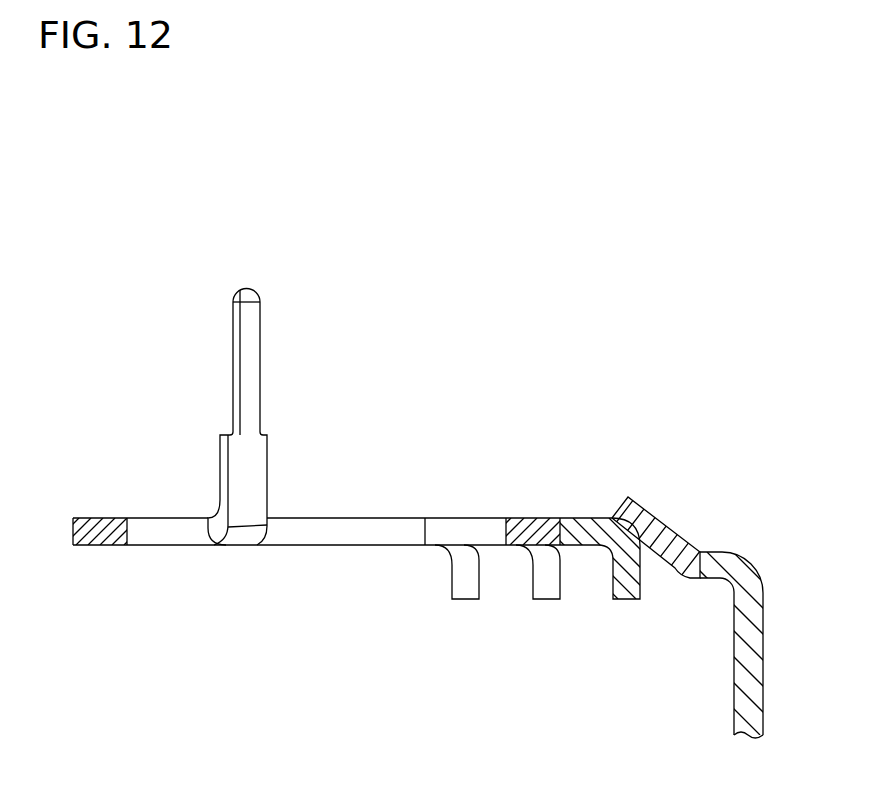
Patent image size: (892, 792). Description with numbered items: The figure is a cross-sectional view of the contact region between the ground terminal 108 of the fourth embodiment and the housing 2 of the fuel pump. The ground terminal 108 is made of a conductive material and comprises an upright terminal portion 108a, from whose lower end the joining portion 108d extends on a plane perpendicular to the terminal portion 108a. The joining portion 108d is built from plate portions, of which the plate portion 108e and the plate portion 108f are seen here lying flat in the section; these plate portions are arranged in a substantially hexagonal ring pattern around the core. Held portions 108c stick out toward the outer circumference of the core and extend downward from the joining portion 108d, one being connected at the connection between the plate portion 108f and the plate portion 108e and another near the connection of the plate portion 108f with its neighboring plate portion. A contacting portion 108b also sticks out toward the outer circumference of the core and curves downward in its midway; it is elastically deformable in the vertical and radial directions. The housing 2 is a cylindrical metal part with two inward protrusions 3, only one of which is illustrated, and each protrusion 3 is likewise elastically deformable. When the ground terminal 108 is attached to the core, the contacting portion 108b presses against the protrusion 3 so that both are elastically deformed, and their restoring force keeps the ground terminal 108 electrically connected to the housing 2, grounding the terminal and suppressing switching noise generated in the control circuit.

The ground terminal 108 is at (320, 314).
The terminal portion 108a is at (247, 326).
The contacting portion 108b is at (622, 587).
The held portion 108c is at (463, 587).
The joining portion 108d is at (297, 549).
The plate portion 108e is at (354, 513).
The plate portion 108f is at (465, 513).
The protrusion 3 is at (660, 526).
The housing 2 is at (753, 601).